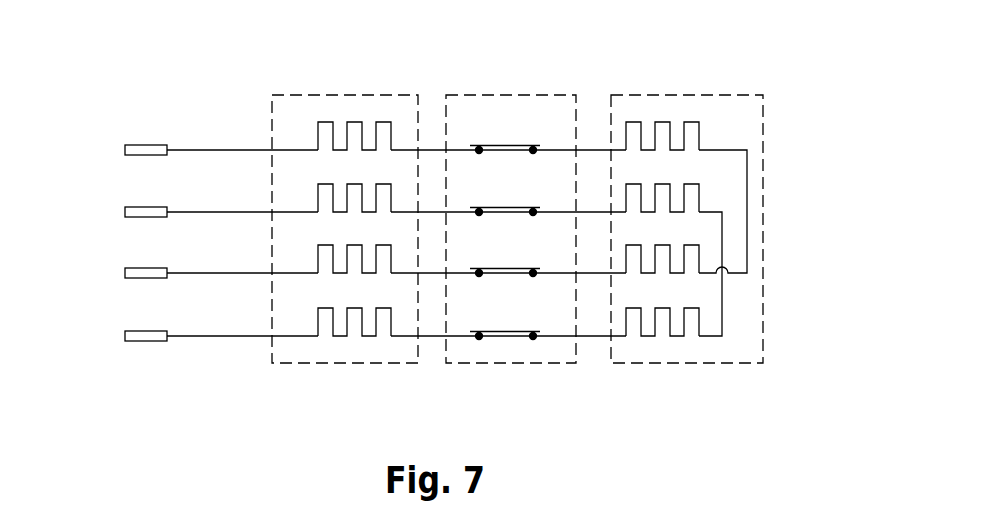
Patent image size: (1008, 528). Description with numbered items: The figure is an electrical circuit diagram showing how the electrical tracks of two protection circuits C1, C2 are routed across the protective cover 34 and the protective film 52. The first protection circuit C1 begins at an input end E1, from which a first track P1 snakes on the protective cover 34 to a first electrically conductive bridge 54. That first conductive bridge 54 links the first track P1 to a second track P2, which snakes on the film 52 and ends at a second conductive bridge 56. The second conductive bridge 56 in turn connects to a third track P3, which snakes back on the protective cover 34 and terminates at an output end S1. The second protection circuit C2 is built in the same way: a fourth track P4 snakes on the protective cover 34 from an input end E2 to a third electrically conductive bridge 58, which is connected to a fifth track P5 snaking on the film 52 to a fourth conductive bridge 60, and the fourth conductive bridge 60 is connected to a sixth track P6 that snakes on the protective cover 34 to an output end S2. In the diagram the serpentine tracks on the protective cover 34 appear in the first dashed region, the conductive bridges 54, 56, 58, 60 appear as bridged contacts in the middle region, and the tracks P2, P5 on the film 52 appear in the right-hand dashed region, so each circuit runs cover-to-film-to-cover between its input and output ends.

The protective cover 34 is at (370, 95).
The film 52 is at (663, 95).
The first electrically conductive bridge 54 is at (505, 145).
The second conductive bridge 56 is at (492, 270).
The third electrically conductive bridge 58 is at (497, 207).
The fourth conductive bridge 60 is at (508, 332).
The input end E1 is at (143, 148).
The input end E2 is at (140, 207).
The output end S1 is at (145, 280).
The output end S2 is at (146, 342).
The first protection circuit C1 is at (227, 146).
The second protection circuit C2 is at (212, 205).
The first track P1 is at (297, 150).
The second track P2 is at (747, 173).
The third track P3 is at (293, 276).
The fourth track P4 is at (296, 212).
The fifth track P5 is at (722, 232).
The sixth track P6 is at (290, 337).